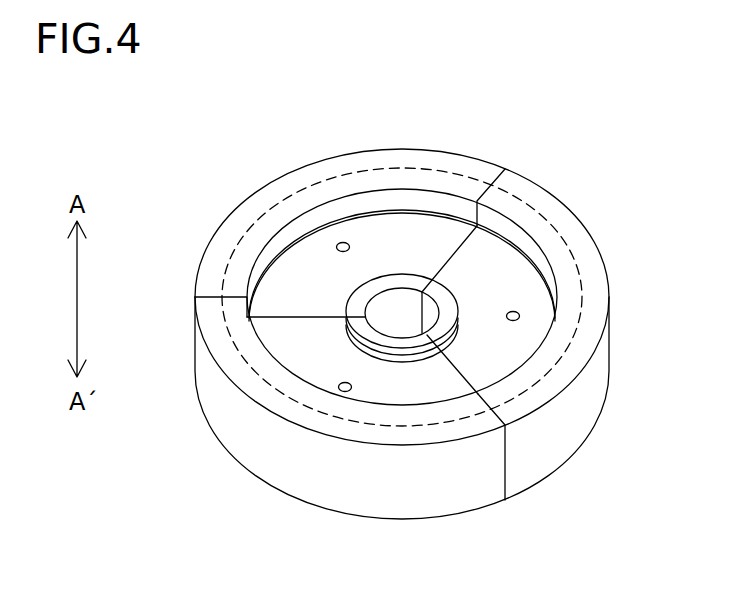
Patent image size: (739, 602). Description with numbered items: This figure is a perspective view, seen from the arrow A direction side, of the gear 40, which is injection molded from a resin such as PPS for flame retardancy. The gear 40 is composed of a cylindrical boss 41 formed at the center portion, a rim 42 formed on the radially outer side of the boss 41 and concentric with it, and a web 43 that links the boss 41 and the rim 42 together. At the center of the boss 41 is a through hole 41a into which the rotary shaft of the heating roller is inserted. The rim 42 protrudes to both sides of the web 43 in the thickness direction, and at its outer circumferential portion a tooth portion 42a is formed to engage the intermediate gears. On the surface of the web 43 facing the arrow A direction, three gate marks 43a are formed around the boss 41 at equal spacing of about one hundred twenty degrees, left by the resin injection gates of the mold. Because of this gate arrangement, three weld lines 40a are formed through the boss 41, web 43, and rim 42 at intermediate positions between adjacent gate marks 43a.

The gear 40 is at (661, 117).
The weld line 40a is at (496, 171).
The cylindrical boss 41 is at (403, 280).
The through hole 41a is at (395, 302).
The rim 42 is at (552, 242).
The tooth portion 42a is at (552, 437).
The web 43 is at (500, 343).
The gate mark 43a is at (338, 242).